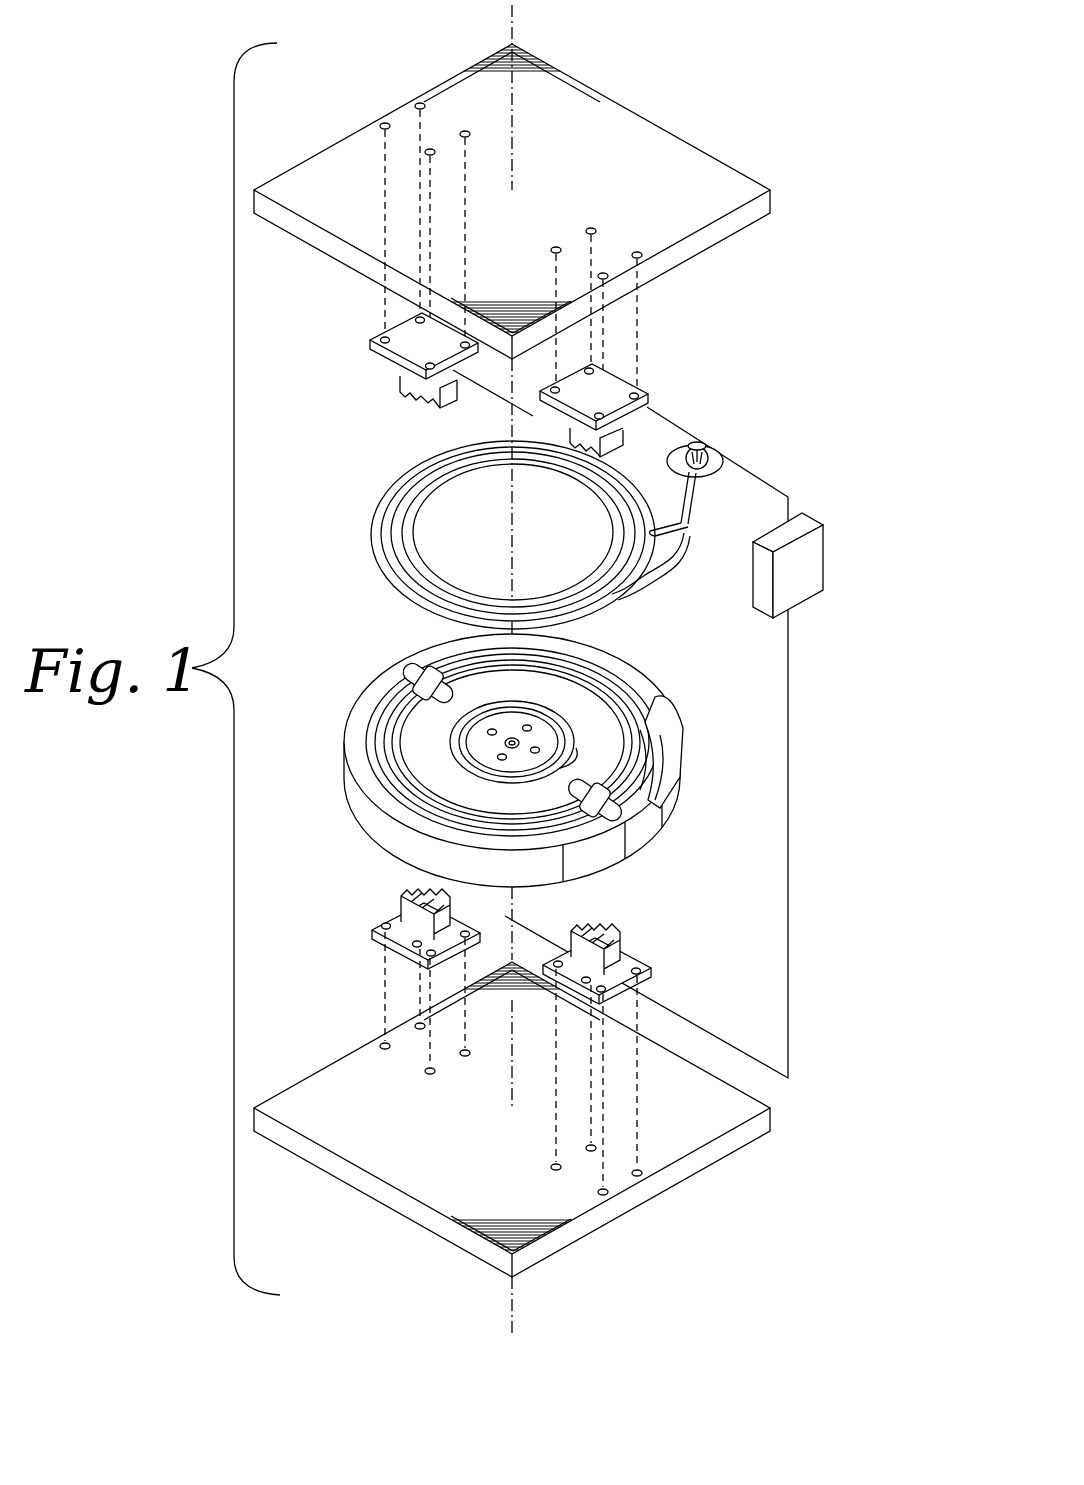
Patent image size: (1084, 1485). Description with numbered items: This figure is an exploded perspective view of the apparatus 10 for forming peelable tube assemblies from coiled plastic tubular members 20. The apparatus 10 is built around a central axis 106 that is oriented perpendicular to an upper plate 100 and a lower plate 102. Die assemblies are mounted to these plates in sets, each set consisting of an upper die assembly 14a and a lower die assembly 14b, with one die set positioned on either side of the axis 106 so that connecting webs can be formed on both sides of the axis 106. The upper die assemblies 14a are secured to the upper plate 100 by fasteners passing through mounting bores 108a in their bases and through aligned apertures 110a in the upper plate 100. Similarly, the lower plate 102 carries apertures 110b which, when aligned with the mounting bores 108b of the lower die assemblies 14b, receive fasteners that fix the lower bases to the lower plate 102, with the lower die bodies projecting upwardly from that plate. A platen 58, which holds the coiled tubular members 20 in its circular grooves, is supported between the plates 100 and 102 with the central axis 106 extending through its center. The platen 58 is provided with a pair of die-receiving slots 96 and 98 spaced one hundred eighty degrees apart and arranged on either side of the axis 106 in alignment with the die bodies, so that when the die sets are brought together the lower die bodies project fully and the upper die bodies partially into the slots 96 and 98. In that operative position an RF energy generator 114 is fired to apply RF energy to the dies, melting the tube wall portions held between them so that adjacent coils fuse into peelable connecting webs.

The apparatus 10 is at (292, 97).
The upper plate 100 is at (657, 124).
The lower plate 102 is at (714, 1143).
The central axis 106 is at (514, 7).
The apertures 110a is at (464, 130).
The apertures 110b is at (598, 1190).
The upper die assembly 14a is at (371, 343).
The lower die assembly 14b is at (371, 930).
The mounting bores 108a is at (646, 392).
The mounting bores 108b is at (641, 968).
The coiled plastic tubular members 20 is at (348, 527).
The RF energy generator 114 is at (806, 525).
The platen 58 is at (650, 658).
The die-receiving slot 98 is at (412, 668).
The die-receiving slot 96 is at (643, 797).